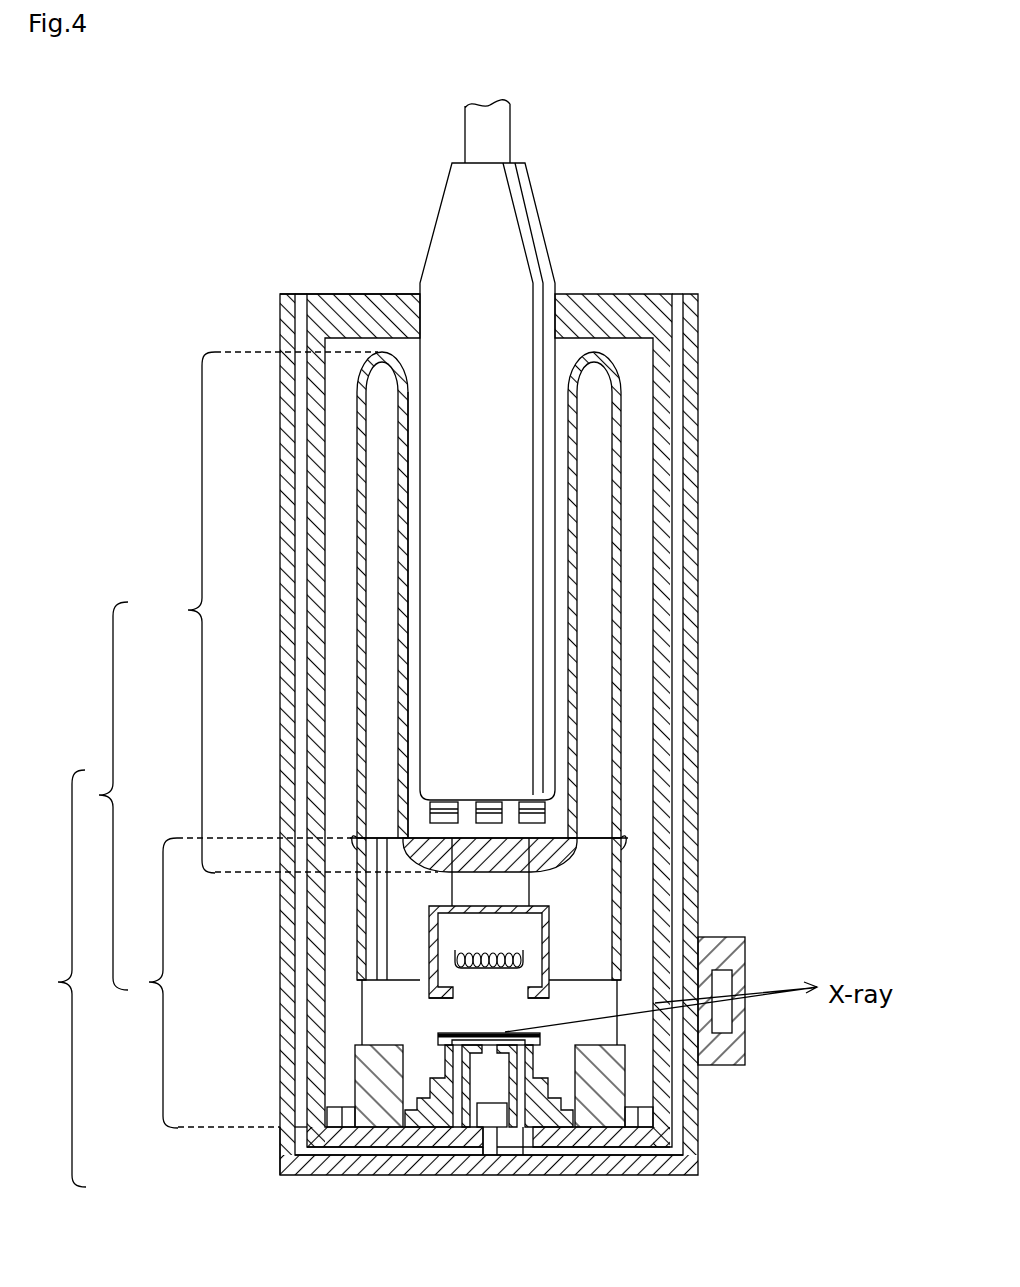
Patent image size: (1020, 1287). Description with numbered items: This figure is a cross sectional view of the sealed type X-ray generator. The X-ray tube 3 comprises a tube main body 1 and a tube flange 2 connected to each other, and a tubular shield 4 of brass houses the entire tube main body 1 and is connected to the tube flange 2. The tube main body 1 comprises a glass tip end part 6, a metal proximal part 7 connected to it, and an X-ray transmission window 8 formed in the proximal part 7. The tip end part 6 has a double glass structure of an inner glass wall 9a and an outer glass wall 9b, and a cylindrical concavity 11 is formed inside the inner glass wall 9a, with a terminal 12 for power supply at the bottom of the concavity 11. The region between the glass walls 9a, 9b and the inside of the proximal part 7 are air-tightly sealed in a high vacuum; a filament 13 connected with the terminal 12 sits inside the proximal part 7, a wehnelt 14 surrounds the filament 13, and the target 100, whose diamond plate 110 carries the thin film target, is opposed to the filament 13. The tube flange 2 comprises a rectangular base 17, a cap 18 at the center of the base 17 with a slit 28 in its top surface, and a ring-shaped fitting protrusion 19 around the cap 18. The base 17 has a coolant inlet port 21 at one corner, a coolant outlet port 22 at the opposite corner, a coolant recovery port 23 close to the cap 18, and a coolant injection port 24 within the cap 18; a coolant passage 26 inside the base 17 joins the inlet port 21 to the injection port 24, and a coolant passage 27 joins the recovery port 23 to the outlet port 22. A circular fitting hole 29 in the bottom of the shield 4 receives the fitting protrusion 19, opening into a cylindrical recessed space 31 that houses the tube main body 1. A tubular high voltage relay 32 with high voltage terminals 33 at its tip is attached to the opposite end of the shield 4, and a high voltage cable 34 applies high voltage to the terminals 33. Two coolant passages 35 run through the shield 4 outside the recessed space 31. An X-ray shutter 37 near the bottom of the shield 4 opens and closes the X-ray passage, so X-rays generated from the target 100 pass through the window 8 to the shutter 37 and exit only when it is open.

The tube main body 1 is at (100, 796).
The tube flange 2 is at (262, 1143).
The X-ray tube 3 is at (57, 978).
The tubular shield 4 is at (287, 272).
The glass tip end part 6 is at (298, 612).
The metal proximal part 7 is at (237, 983).
The X-ray transmission window 8 is at (360, 1008).
The inner glass wall 9a is at (403, 513).
The outer glass wall 9b is at (360, 582).
The cylindrical concavity 11 is at (412, 445).
The terminal 12 is at (533, 823).
The filament 13 is at (528, 950).
The wehnelt 14 is at (549, 998).
The base 17 is at (460, 1165).
The cap 18 is at (468, 1065).
The fitting protrusion 19 is at (335, 1118).
The coolant inlet port 21 is at (303, 1127).
The coolant outlet port 22 is at (678, 1137).
The coolant recovery port 23 is at (523, 1140).
The coolant injection port 24 is at (495, 1117).
The coolant passage 26 is at (345, 1150).
The coolant passage 27 is at (613, 1150).
The slit 28 is at (447, 1112).
The circular fitting hole 29 is at (342, 1067).
The recessed space 31 is at (660, 450).
The high voltage relay 32 is at (491, 528).
The high voltage terminals 33 is at (530, 802).
The high voltage cable 34 is at (500, 130).
The coolant passages 35 is at (290, 687).
The X-ray shutter 37 is at (733, 945).
The target 100 is at (457, 1025).
The diamond plate 110 is at (490, 1033).